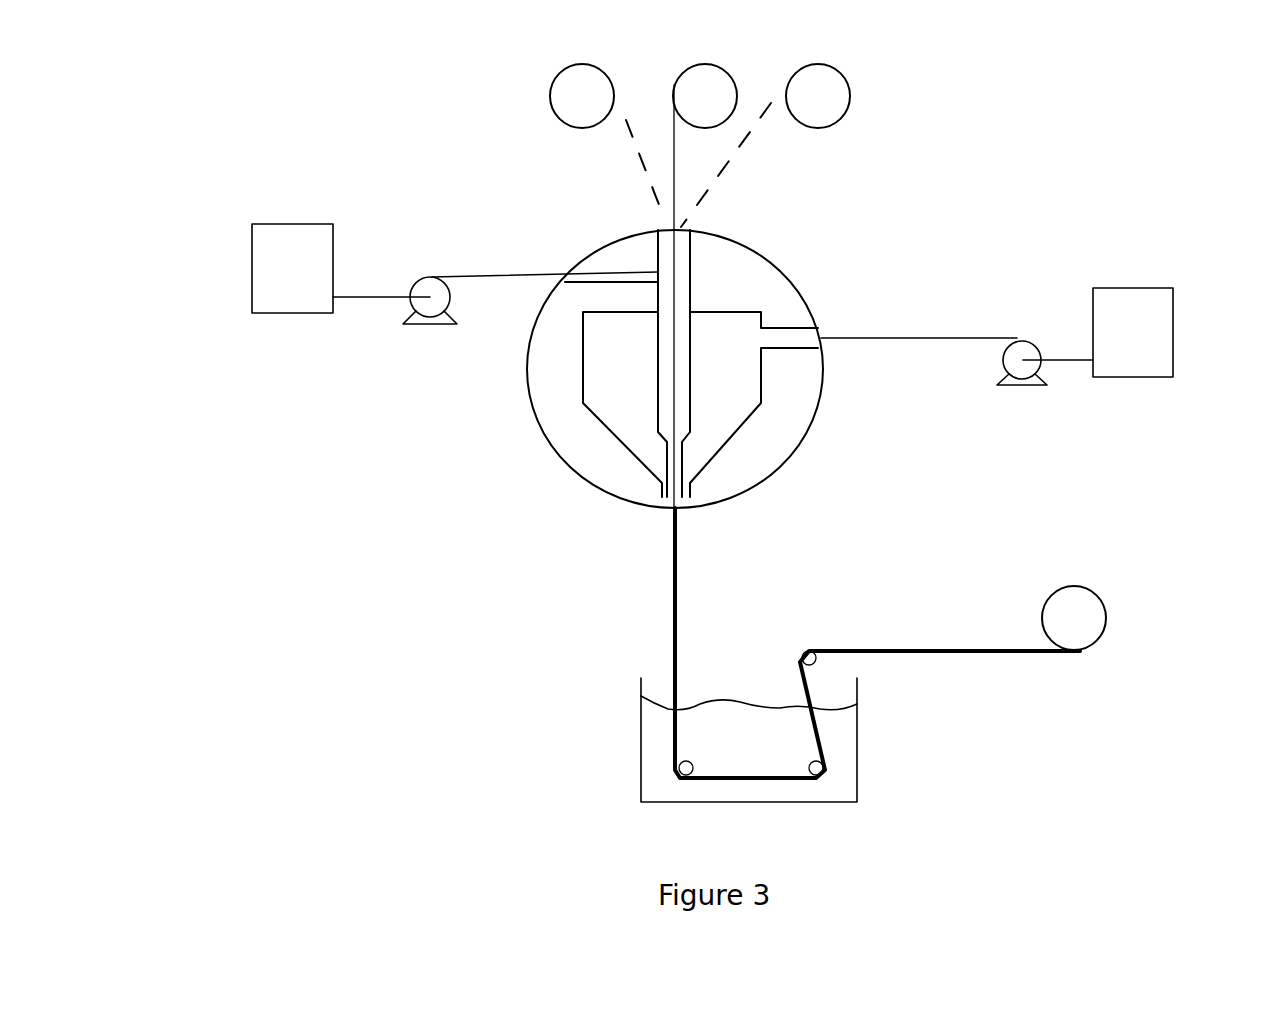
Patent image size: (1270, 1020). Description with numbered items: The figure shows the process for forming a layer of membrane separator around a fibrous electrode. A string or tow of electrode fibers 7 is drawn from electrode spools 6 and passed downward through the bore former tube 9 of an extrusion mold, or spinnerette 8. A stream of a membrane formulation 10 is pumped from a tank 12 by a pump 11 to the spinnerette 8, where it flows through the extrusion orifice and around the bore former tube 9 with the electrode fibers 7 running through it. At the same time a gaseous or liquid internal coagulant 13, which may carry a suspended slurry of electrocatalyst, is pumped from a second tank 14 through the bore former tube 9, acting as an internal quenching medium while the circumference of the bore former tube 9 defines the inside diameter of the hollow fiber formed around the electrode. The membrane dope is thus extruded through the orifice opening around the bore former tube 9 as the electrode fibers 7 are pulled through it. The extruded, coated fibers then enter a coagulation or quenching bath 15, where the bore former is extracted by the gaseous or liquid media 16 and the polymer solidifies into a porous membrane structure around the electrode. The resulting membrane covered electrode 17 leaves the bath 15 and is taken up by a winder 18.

The electrode spool 6 is at (703, 64).
The electrode fibers 7 is at (677, 223).
The extrusion mold (spinnerette) 8 is at (535, 412).
The bore former tube 9 is at (692, 282).
The membrane formulation 10 is at (883, 340).
The pump 11 is at (1022, 383).
The tank 12 is at (1173, 343).
The internal coagulant 13 is at (472, 275).
The tank 14 is at (252, 274).
The coagulation or quenching bath 15 is at (641, 769).
The gaseous or liquid media 16 is at (719, 707).
The membrane covered electrode 17 is at (870, 647).
The winder 18 is at (1077, 587).